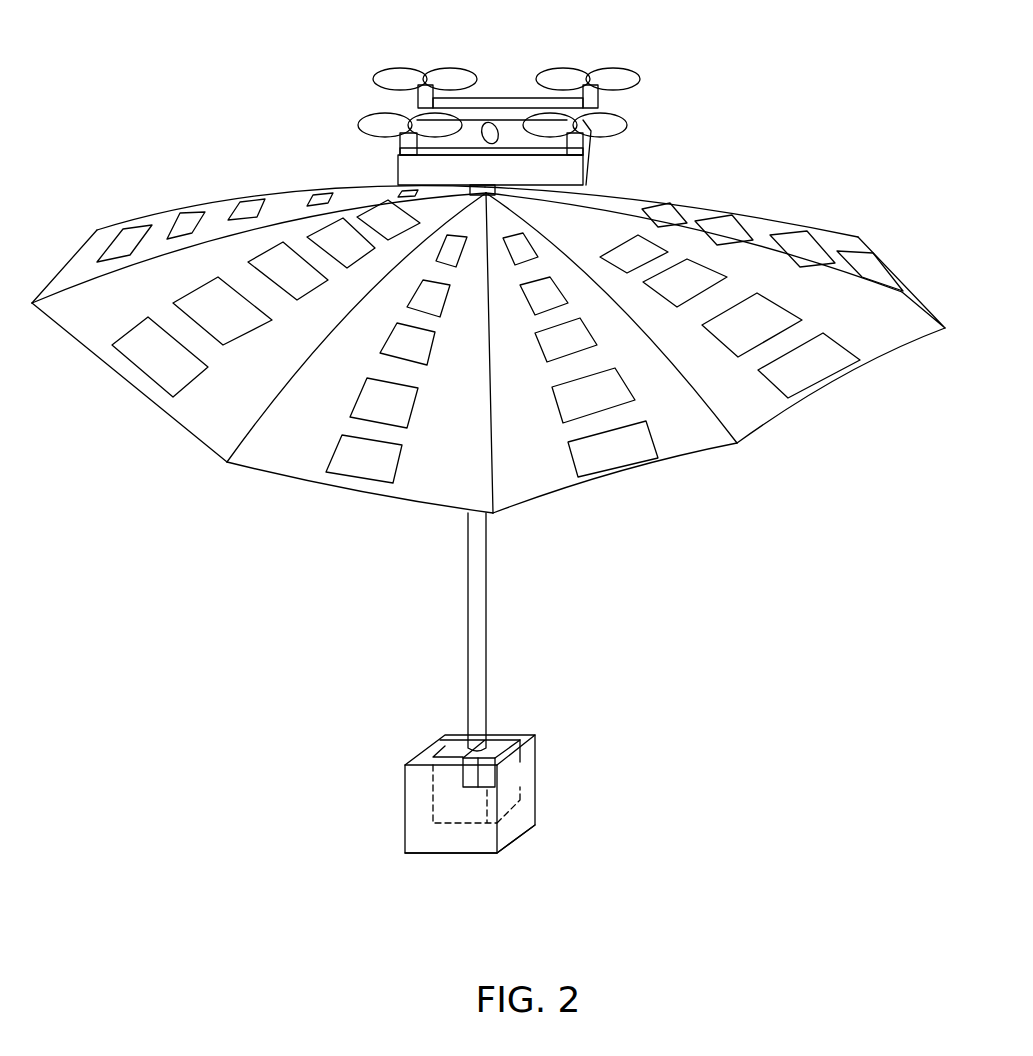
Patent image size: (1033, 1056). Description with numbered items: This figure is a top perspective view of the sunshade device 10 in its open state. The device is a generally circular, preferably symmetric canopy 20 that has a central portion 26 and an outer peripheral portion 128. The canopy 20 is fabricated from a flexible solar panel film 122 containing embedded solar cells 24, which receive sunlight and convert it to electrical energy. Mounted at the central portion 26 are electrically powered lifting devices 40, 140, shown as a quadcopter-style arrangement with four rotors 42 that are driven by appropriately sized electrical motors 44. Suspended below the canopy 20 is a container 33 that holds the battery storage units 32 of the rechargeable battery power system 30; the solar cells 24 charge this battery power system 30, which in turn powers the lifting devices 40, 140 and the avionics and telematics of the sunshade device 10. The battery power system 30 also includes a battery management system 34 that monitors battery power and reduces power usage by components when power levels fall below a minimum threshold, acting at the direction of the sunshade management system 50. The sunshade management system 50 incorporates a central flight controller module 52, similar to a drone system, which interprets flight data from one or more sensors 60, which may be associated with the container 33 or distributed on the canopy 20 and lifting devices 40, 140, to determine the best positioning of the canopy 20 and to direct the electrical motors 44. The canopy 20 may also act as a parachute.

The sunshade device 10 is at (840, 170).
The canopy 20 is at (752, 415).
The solar cells 24 is at (186, 216).
The central portion 26 is at (477, 150).
The rechargeable battery power system 30 is at (513, 783).
The battery storage units 32 is at (433, 823).
The container 33 is at (513, 840).
The battery management system 34 is at (448, 767).
The electrically powered lifting device 40 is at (620, 78).
The rotors 42 is at (552, 78).
The electrical motors 44 is at (407, 143).
The sunshade management system 50 is at (433, 750).
The central flight controller module 52 is at (515, 767).
The sensors 60 is at (427, 838).
The flexible solar panel film 122 is at (210, 425).
The peripheral portion 128 is at (905, 292).
The electrically powered lifting device 140 is at (400, 78).